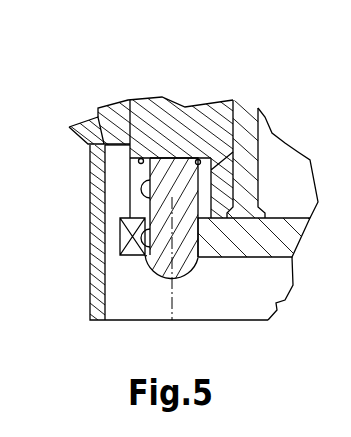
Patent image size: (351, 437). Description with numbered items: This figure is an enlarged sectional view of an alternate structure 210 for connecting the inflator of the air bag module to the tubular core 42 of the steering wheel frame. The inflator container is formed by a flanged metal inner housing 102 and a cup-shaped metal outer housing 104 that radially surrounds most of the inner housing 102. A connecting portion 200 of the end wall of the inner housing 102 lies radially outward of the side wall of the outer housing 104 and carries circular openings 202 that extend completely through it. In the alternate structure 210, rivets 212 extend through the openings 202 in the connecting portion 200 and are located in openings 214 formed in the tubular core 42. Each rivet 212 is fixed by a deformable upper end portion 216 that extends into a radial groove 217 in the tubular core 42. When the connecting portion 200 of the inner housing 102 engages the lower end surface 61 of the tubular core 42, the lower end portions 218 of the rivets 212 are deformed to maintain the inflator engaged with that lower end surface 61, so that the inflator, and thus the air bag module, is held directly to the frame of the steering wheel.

The tubular core 42 is at (140, 120).
The outer housing 104 is at (247, 102).
The inner housing 102 is at (292, 218).
The connecting portion 200 is at (233, 242).
The alternate structure 210 is at (132, 268).
The rivet 212 is at (161, 238).
The lower end portion 218 is at (192, 268).
The deformable upper end portion 216 is at (140, 158).
The radial groove 217 is at (197, 159).
The opening 214 is at (148, 199).
The lower end surface 61 is at (148, 238).
The circular opening 202 is at (145, 234).